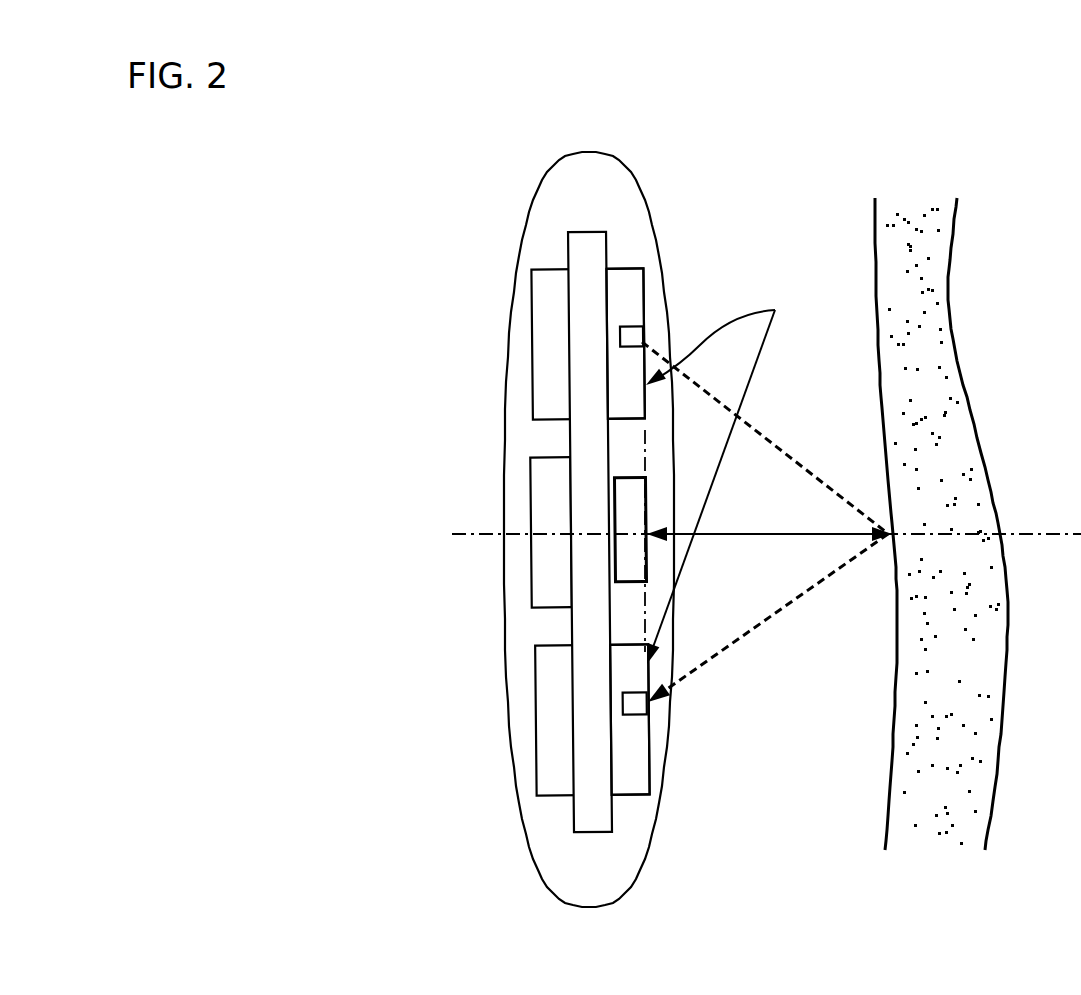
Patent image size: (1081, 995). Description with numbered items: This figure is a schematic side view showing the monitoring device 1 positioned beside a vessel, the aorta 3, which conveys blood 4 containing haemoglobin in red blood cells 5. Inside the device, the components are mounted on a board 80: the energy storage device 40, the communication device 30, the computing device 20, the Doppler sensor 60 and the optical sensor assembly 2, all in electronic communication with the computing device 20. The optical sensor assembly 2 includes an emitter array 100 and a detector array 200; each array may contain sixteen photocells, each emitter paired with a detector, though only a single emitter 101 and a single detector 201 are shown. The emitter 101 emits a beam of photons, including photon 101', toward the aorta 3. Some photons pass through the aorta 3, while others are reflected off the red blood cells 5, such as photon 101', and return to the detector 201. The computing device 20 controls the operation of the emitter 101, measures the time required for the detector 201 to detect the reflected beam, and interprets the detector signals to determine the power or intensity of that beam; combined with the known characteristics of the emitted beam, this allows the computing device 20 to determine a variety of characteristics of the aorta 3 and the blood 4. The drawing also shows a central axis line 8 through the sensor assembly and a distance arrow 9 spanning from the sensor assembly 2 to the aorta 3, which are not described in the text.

The monitoring device 1 is at (486, 256).
The optical sensor assembly 2 is at (717, 471).
The aorta 3 is at (955, 232).
The blood 4 is at (938, 298).
The red blood cells 5 is at (935, 365).
The optical axis 8 is at (645, 448).
The measuring distance 9 is at (737, 534).
The computing device 20 is at (552, 715).
The communication device 30 is at (550, 484).
The energy storage device 40 is at (550, 318).
The Doppler sensor 60 is at (612, 558).
The board 80 is at (585, 816).
The emitter array 100 is at (618, 268).
The emitter 101 is at (674, 305).
The photon 101' is at (765, 522).
The detector array 200 is at (648, 781).
The detector 201 is at (636, 705).